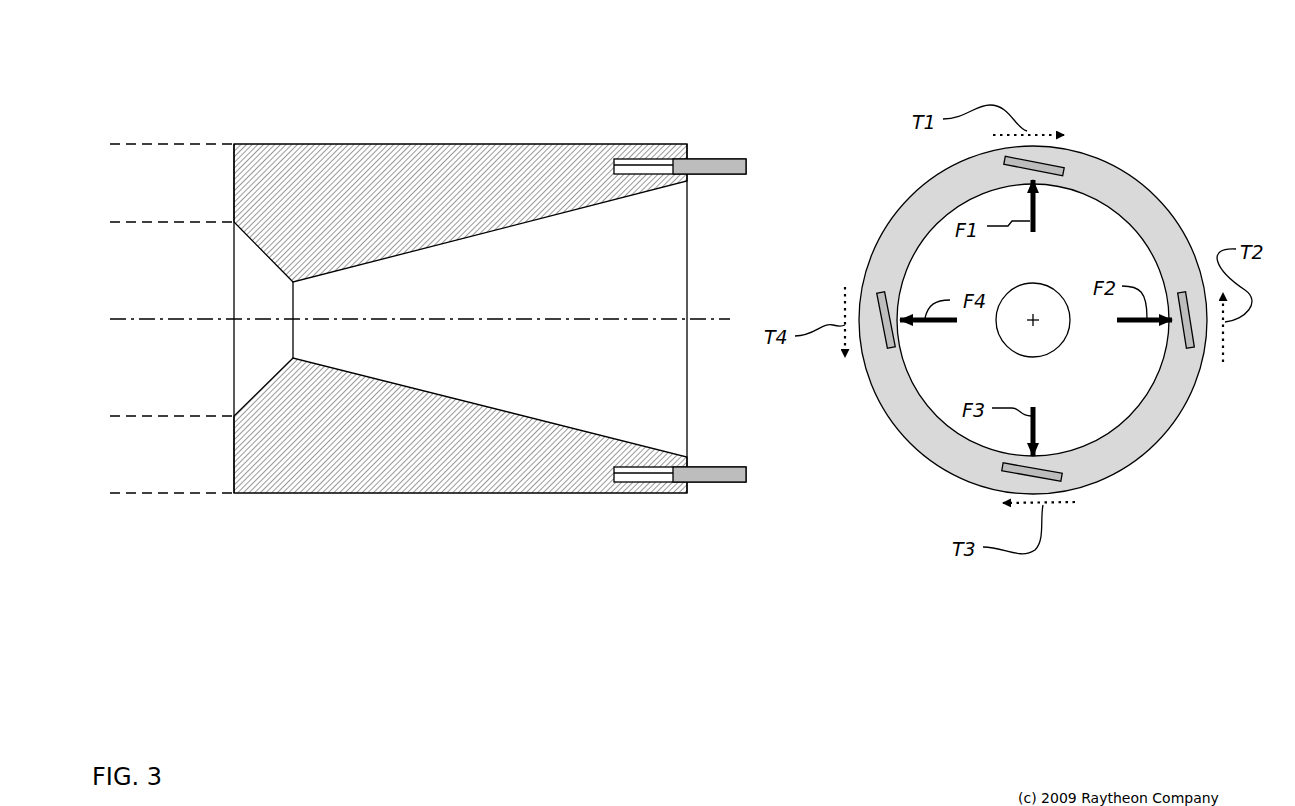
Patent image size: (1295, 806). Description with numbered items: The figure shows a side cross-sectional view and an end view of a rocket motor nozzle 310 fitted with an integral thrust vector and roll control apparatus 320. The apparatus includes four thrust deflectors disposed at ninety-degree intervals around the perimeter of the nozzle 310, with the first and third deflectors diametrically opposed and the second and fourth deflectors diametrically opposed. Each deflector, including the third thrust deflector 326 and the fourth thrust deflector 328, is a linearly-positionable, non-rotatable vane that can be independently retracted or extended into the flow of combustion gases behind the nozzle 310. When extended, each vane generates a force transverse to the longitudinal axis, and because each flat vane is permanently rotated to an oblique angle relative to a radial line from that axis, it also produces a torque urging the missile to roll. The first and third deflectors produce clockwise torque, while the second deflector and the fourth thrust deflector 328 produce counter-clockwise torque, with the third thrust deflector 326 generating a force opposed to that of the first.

The nozzle 310 is at (632, 440).
The integral thrust vector and roll control apparatus 320 is at (830, 74).
The third thrust deflector 326 is at (1062, 476).
The fourth thrust deflector 328 is at (880, 292).